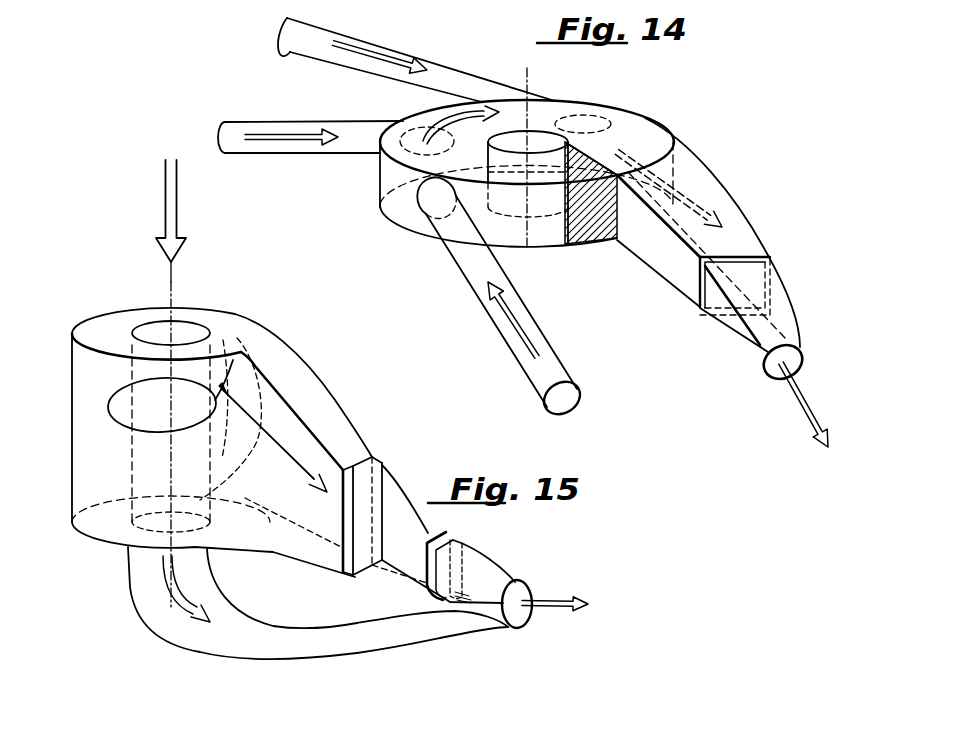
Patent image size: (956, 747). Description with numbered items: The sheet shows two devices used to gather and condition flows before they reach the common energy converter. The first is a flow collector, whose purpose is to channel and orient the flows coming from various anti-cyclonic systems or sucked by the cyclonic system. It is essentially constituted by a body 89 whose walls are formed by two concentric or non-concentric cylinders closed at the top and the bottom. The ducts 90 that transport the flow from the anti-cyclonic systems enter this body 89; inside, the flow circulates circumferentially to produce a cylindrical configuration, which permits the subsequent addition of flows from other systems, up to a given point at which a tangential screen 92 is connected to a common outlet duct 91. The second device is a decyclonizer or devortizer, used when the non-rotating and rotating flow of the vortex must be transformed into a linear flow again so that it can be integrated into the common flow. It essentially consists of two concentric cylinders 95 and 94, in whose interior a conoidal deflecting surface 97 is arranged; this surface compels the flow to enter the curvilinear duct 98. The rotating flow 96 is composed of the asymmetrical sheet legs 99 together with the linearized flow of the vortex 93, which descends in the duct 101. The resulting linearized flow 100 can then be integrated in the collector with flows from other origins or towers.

In FIG. 14, the body 89 is at (380, 207).
In FIG. 14, the ducts 90 is at (287, 39).
In FIG. 14, the common outlet duct 91 is at (727, 214).
In FIG. 14, the tangential screen 92 is at (590, 212).
In FIG. 15, the linearized flow of the vortex 93 is at (174, 603).
In FIG. 15, the concentric cylinder 94 is at (129, 443).
In FIG. 15, the concentric cylinder 95 is at (63, 336).
In FIG. 15, the rotating flow 96 is at (237, 363).
In FIG. 15, the conoidal deflecting surface 97 is at (241, 445).
In FIG. 15, the curvilinear duct 98 is at (320, 522).
In FIG. 15, the asymmetrical sheet legs 99 is at (490, 594).
In FIG. 15, the linearized flow 100 is at (545, 601).
In FIG. 15, the duct 101 is at (443, 627).